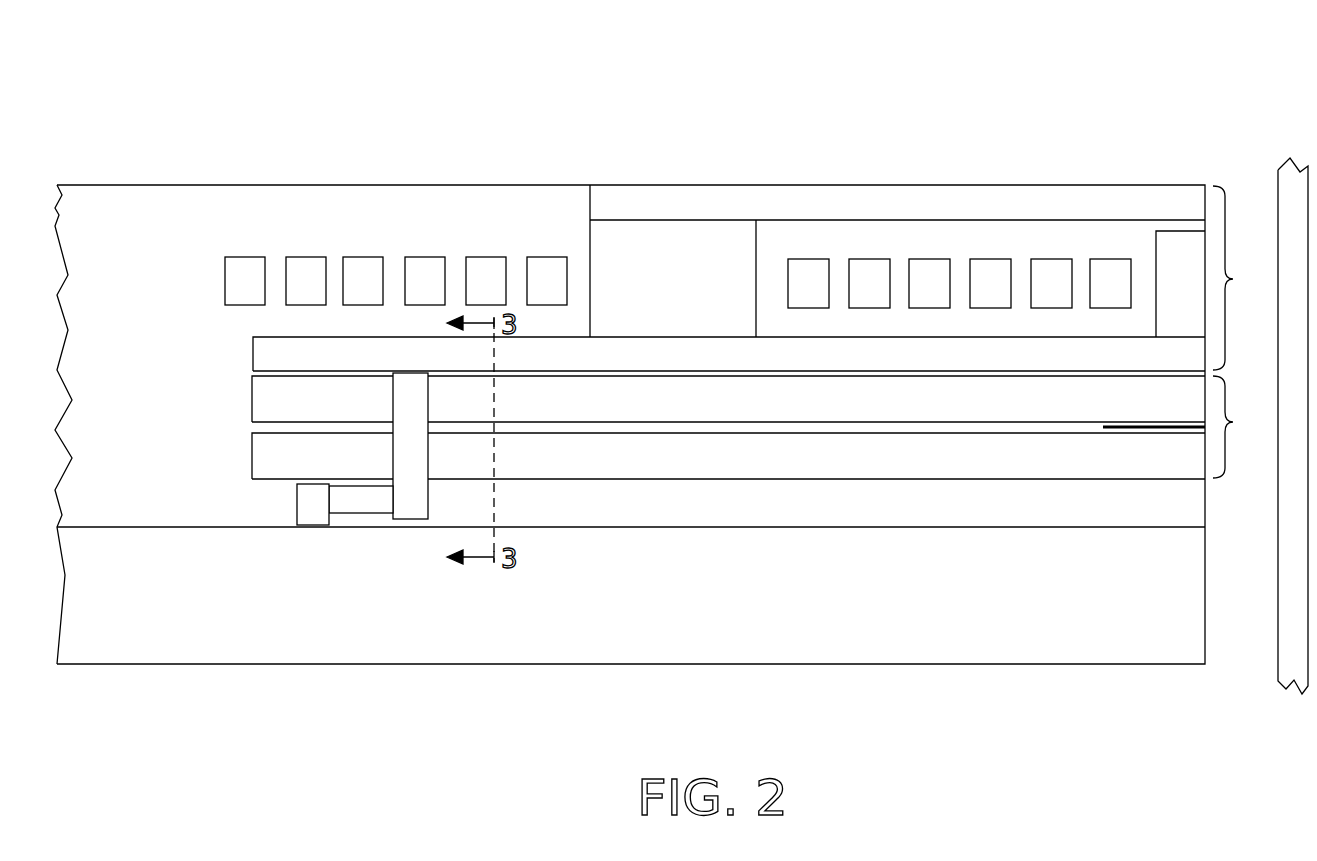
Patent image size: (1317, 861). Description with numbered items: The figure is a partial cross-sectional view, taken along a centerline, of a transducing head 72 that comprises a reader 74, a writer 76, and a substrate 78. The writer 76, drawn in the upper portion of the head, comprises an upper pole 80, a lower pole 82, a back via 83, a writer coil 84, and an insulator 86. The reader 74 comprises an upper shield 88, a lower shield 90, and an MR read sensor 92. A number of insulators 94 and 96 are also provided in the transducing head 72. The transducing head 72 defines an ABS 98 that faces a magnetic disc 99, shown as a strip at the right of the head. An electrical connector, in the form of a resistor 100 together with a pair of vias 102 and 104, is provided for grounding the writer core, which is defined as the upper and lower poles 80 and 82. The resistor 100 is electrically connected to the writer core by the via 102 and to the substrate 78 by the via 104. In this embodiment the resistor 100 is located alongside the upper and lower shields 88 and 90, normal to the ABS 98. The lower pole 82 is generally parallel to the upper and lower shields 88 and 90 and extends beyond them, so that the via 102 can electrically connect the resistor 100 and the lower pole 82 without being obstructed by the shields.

The transducing head 72 is at (682, 96).
The reader 74 is at (1243, 427).
The writer 76 is at (930, 277).
The substrate 78 is at (1066, 664).
The upper pole 80 is at (1010, 200).
The lower pole 82 is at (527, 337).
The back via 83 is at (686, 257).
The writer coil 84 is at (305, 257).
The insulator 86 is at (1135, 235).
The upper shield 88 is at (1025, 419).
The lower shield 90 is at (1030, 472).
The MR read sensor 92 is at (1205, 427).
The insulator 94 is at (563, 237).
The insulator 96 is at (892, 524).
The ABS 98 is at (1220, 524).
The magnetic disc 99 is at (1296, 192).
The resistor 100 is at (355, 513).
The via 102 is at (415, 519).
The via 104 is at (315, 527).